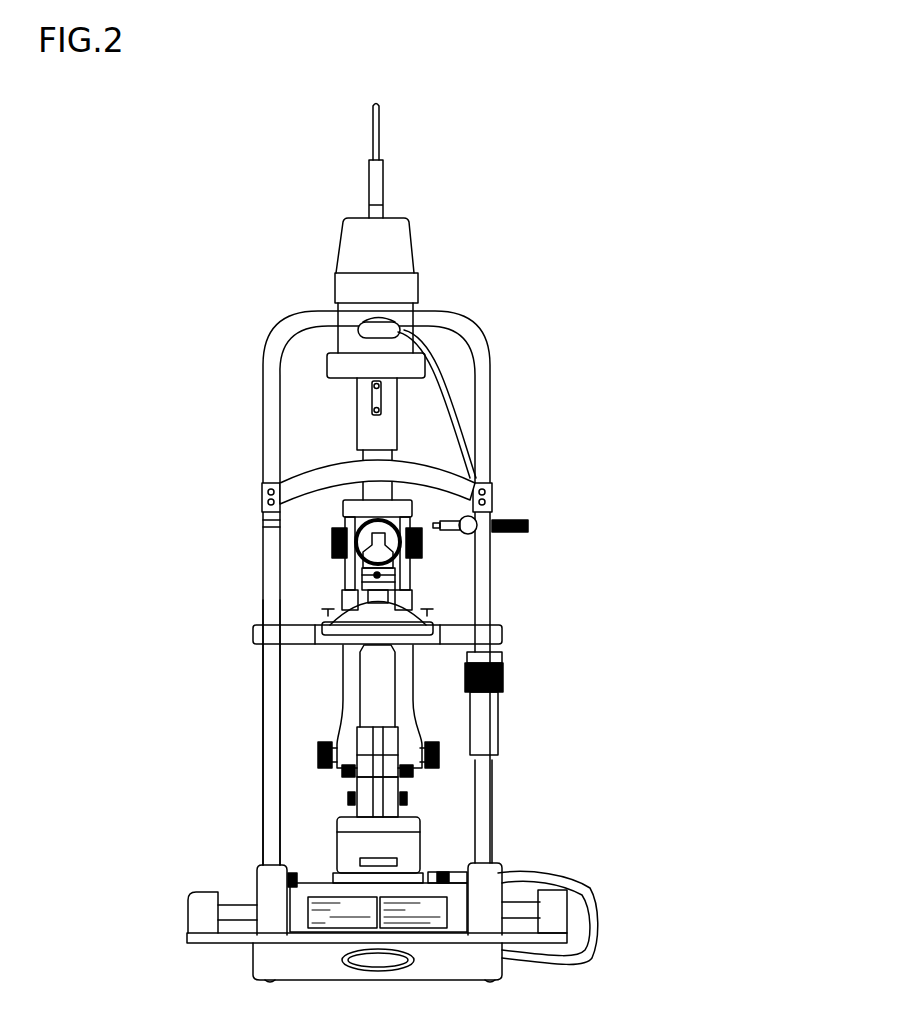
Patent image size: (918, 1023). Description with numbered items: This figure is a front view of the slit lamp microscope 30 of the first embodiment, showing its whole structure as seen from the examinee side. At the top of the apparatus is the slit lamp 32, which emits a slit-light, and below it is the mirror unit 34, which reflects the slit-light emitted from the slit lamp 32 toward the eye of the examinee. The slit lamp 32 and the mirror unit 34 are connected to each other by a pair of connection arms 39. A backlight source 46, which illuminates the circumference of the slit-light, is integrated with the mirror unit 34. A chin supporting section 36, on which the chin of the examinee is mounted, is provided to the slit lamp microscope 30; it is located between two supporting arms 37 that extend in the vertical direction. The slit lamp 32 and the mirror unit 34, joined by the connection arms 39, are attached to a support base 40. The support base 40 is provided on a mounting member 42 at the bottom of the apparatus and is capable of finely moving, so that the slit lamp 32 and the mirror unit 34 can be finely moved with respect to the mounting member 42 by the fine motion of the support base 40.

The slit lamp microscope 30 is at (501, 270).
The slit lamp 32 is at (340, 287).
The mirror unit 34 is at (345, 563).
The chin supporting section 36 is at (415, 614).
The supporting arms 37 is at (263, 757).
The connection arms 39 is at (410, 586).
The support base 40 is at (412, 843).
The mounting member 42 is at (328, 890).
The backlight source 46 is at (403, 572).